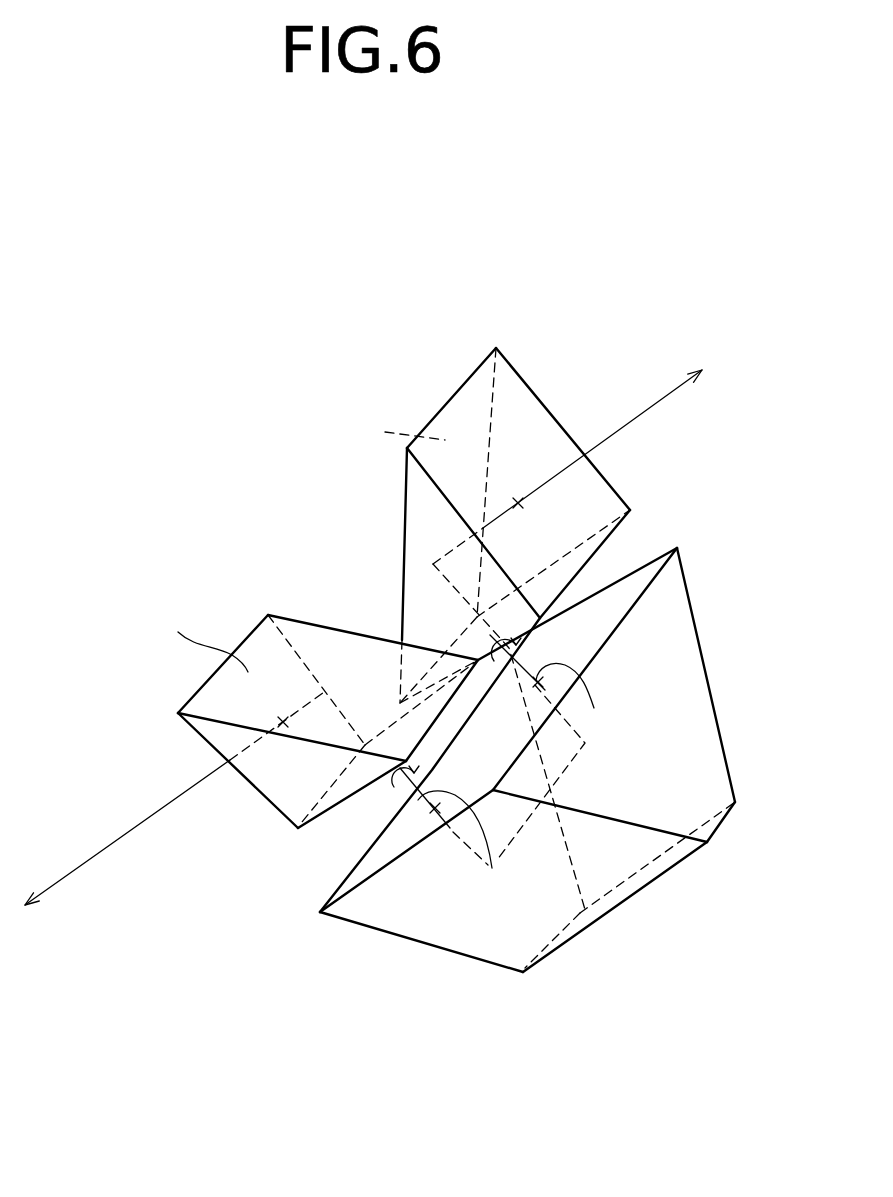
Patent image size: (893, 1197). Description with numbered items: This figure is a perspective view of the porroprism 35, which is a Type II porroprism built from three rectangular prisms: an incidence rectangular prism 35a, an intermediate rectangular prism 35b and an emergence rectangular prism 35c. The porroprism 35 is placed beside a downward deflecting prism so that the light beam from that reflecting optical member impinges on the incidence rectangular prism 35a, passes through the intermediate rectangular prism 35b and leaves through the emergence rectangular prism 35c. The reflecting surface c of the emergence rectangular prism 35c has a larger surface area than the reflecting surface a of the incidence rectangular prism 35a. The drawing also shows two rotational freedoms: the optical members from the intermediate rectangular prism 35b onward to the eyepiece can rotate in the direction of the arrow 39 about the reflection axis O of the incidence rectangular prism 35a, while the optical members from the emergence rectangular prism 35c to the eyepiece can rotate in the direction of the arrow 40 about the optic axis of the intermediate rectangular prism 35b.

The porroprism 35 is at (332, 370).
The incidence rectangular prism 35a is at (266, 798).
The intermediate rectangular prism 35b is at (574, 934).
The emergence rectangular prism 35c is at (620, 492).
The arrow 39 is at (395, 790).
The arrow 40 is at (514, 650).